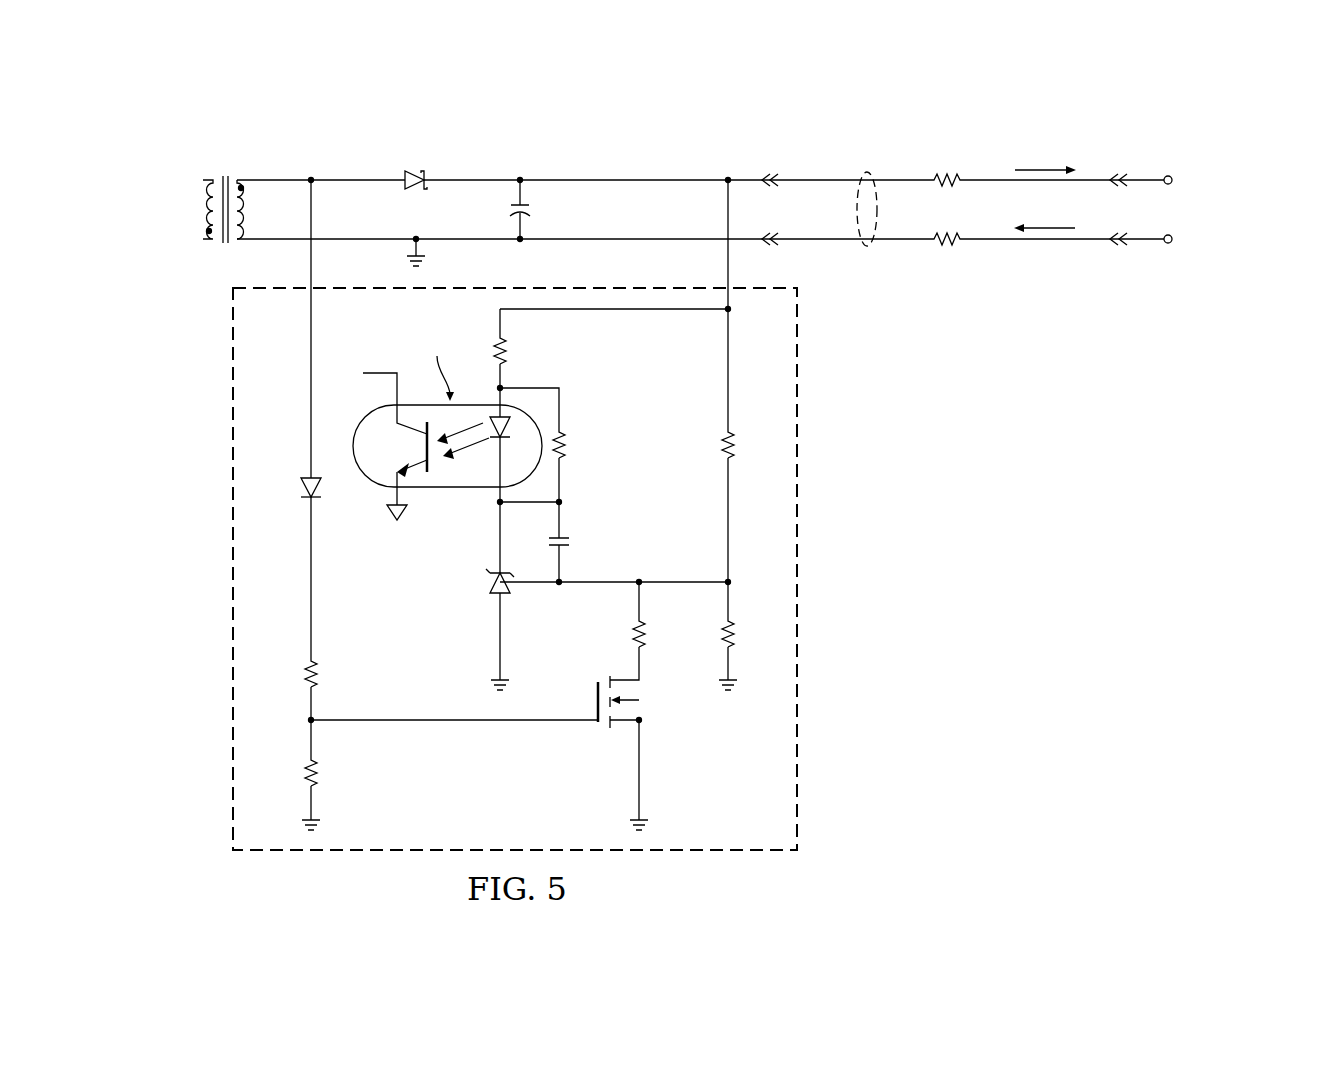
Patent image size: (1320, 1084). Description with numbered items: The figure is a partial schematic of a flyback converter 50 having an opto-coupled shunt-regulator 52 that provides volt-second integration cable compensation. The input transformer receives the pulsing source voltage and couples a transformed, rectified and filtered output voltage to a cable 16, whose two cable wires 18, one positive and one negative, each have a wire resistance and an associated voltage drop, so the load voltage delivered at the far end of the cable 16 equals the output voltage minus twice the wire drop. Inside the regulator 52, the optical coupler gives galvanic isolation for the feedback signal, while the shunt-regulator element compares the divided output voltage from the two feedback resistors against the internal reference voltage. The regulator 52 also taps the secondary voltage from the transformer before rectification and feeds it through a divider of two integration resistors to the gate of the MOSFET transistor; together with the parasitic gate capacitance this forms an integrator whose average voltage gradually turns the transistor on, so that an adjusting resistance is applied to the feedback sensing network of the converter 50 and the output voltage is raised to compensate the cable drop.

The flyback converter 50 is at (490, 134).
The cable wire 18 is at (792, 179).
The cable 16 is at (866, 173).
The opto-coupled shunt-regulator 52 is at (528, 823).